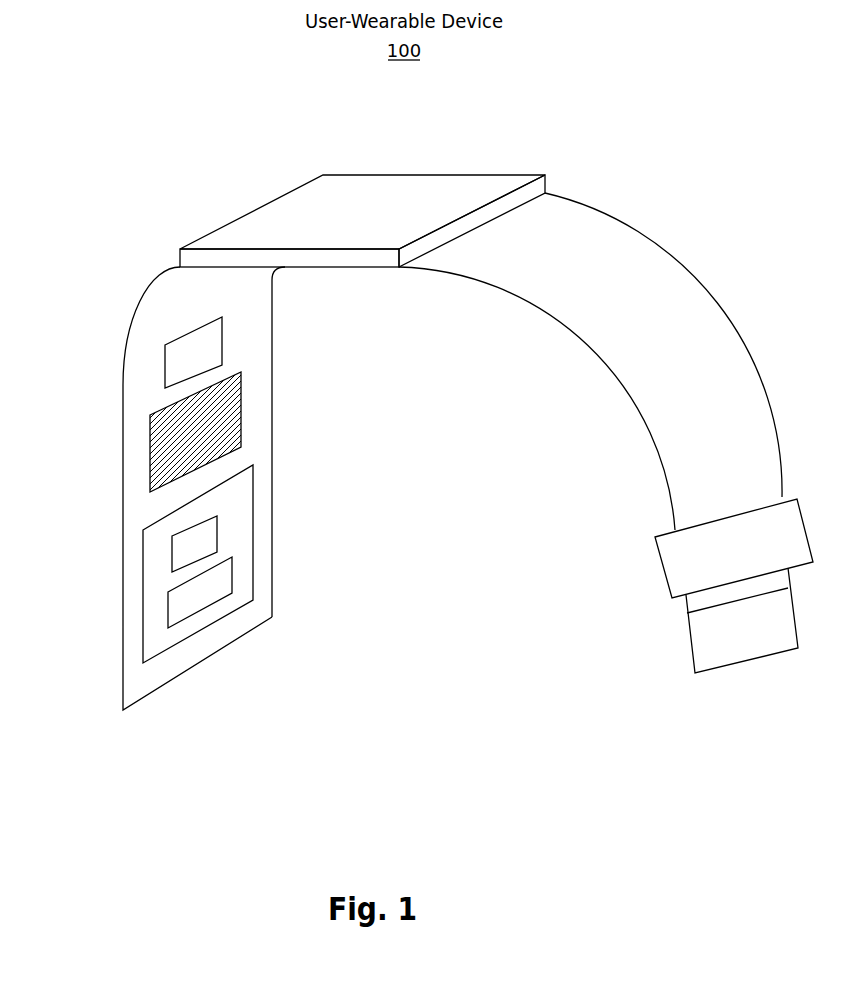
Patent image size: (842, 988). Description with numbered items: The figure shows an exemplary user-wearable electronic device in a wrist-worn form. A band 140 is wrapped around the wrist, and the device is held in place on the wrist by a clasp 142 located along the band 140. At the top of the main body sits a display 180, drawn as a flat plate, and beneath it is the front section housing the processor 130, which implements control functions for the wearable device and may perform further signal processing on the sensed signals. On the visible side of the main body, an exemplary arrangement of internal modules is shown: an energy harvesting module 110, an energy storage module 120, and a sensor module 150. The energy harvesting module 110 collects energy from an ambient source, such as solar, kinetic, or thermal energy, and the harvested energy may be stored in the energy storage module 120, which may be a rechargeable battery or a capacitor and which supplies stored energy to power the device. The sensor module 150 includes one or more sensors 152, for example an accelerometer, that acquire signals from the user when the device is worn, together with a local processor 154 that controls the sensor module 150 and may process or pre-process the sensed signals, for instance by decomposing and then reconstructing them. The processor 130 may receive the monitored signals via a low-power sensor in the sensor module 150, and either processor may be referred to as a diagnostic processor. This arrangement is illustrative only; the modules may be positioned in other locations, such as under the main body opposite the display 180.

The energy harvesting module 110 is at (150, 430).
The energy storage module 120 is at (165, 362).
The processor 130 is at (348, 268).
The band 140 is at (165, 293).
The clasp 142 is at (662, 572).
The sensor module 150 is at (143, 568).
The sensor 152 is at (232, 570).
The local processor 154 is at (217, 530).
The display 180 is at (302, 205).